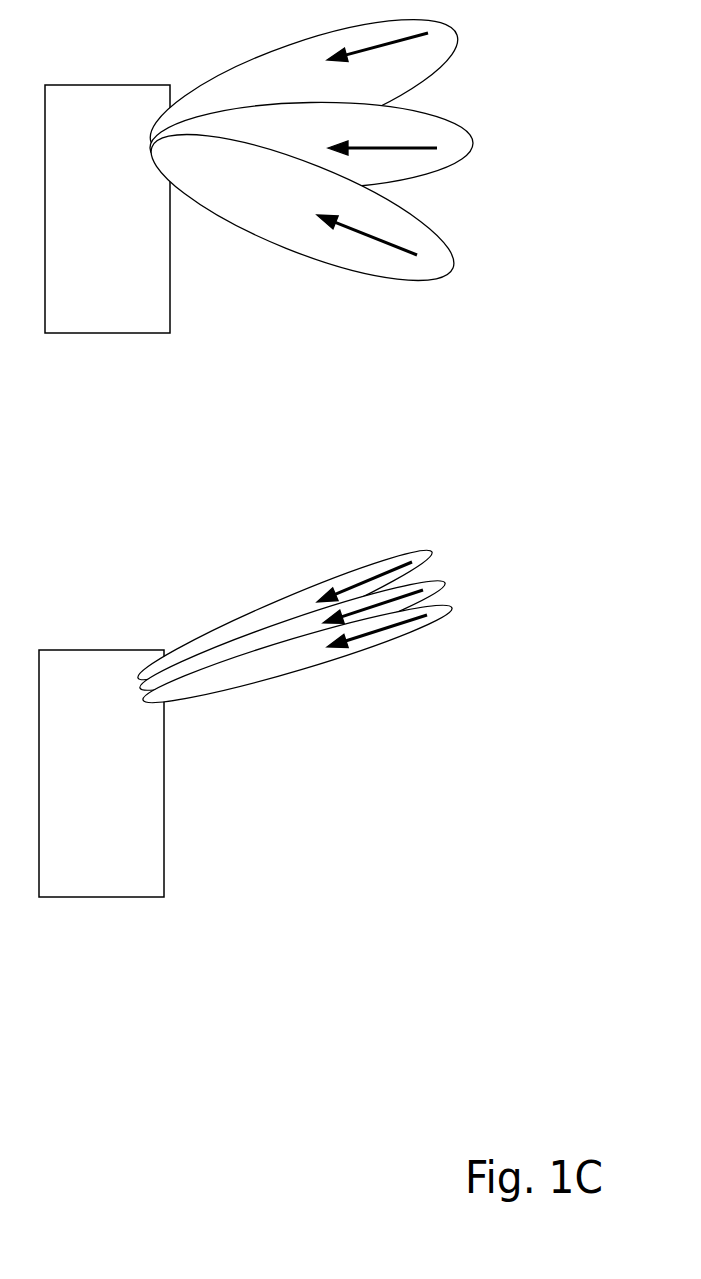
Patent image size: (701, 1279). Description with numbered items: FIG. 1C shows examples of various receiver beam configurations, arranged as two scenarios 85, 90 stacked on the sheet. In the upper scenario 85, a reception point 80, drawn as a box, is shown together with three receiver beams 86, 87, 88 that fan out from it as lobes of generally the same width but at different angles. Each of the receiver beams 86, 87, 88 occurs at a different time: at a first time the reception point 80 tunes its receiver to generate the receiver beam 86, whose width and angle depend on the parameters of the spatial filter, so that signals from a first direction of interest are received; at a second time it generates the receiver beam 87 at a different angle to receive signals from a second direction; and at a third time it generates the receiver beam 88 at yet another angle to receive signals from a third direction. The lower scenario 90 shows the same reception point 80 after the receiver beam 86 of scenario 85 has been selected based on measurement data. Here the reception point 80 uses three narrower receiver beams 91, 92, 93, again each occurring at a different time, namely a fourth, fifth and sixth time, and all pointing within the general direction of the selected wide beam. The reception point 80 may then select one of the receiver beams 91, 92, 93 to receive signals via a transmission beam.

The reception point 80 is at (104, 491).
The scenario 85 is at (292, 217).
The receiver beam 86 is at (458, 37).
The receiver beam 87 is at (473, 143).
The receiver beam 88 is at (453, 267).
The scenario 90 is at (275, 766).
The receiver beam 91 is at (432, 552).
The receiver beam 92 is at (445, 583).
The receiver beam 93 is at (452, 608).